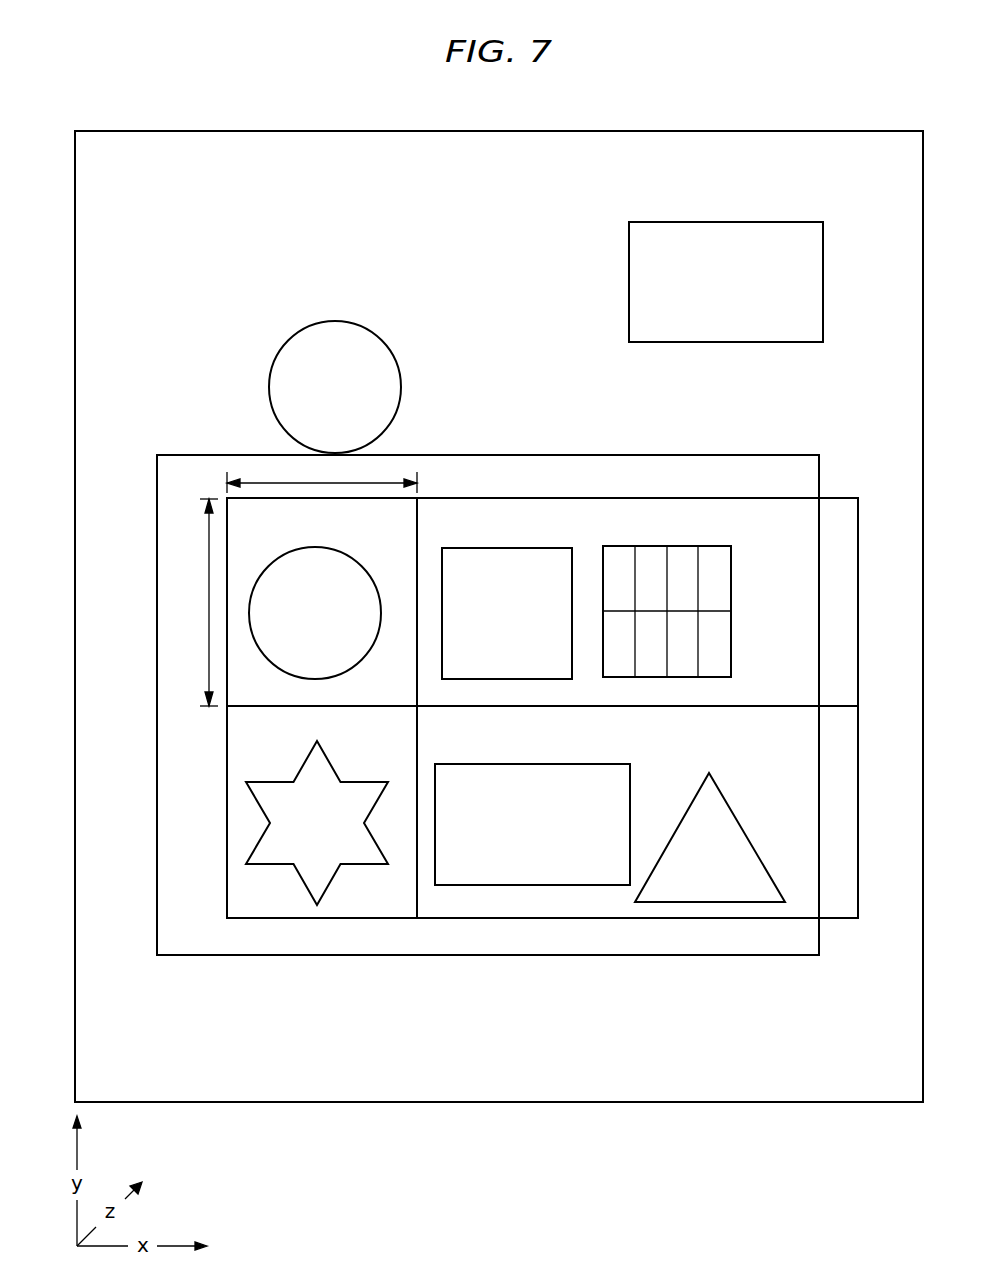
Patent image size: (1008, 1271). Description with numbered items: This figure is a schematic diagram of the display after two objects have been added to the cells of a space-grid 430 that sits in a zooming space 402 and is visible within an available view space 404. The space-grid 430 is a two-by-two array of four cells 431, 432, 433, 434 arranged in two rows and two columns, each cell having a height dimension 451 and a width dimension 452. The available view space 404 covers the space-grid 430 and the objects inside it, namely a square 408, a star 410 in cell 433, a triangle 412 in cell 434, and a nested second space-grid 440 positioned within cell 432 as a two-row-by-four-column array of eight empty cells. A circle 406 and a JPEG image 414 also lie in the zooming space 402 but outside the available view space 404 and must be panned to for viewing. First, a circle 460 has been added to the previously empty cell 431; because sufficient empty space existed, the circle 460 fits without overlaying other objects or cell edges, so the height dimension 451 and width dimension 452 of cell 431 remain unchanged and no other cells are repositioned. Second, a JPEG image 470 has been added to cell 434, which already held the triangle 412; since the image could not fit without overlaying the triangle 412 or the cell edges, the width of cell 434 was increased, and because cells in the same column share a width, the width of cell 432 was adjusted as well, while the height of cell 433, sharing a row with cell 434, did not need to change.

The zooming space 402 is at (578, 131).
The available view space 404 is at (724, 455).
The circle 406 is at (399, 367).
The square 408 is at (518, 548).
The star 410 is at (330, 765).
The triangle 412 is at (740, 828).
The JPEG image 414 is at (823, 253).
The space-grid 430 is at (556, 498).
The cell 431 is at (274, 536).
The cell 432 is at (464, 531).
The cell 433 is at (276, 739).
The cell 434 is at (464, 739).
The second space-grid 440 is at (677, 546).
The height dimension 451 is at (209, 548).
The width dimension 452 is at (260, 483).
The circle 460 is at (345, 550).
The JPEG image 470 is at (556, 764).